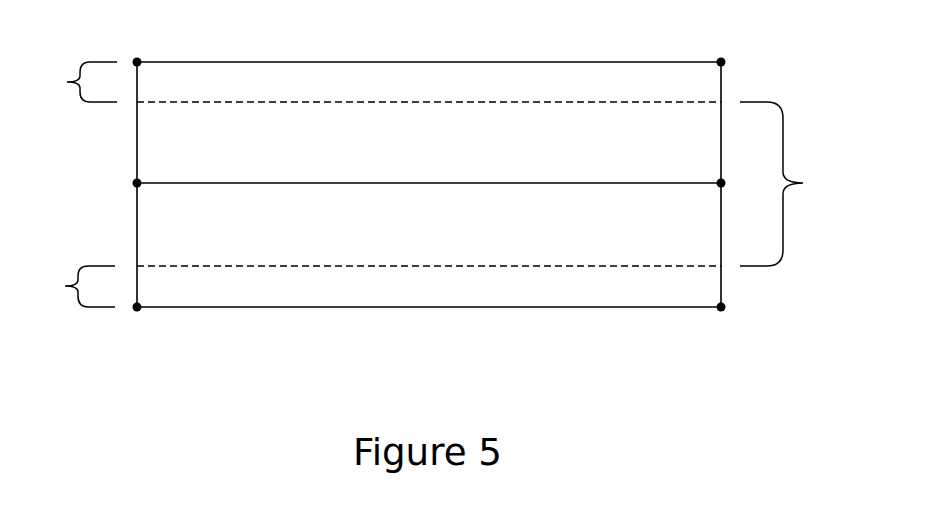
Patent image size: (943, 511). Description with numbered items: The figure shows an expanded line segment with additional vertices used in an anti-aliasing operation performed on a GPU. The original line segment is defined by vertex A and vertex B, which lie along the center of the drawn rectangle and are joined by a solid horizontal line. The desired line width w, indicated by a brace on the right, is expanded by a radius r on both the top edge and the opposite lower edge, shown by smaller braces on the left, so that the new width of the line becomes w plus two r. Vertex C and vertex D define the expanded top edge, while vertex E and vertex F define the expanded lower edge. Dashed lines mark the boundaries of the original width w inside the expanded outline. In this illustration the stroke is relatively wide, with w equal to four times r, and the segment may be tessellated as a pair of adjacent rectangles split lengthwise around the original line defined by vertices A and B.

The vertex A is at (139, 180).
The vertex B is at (719, 180).
The vertex C is at (139, 59).
The vertex D is at (719, 59).
The vertex E is at (139, 309).
The vertex F is at (719, 309).
The radius r is at (80, 184).
The line width w is at (788, 184).